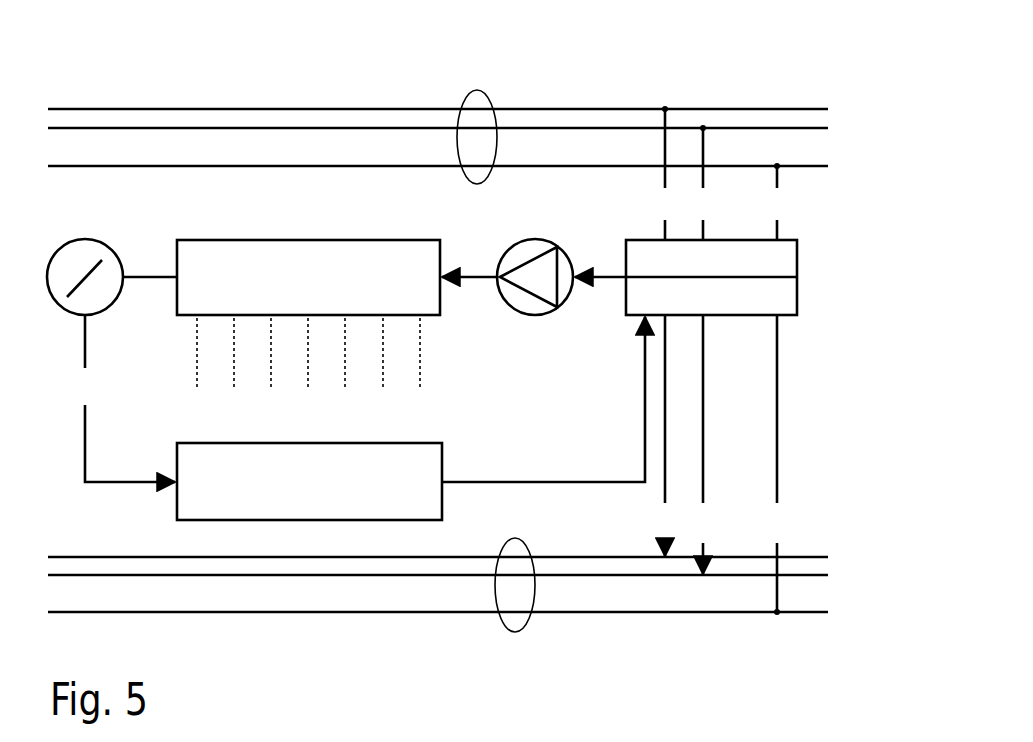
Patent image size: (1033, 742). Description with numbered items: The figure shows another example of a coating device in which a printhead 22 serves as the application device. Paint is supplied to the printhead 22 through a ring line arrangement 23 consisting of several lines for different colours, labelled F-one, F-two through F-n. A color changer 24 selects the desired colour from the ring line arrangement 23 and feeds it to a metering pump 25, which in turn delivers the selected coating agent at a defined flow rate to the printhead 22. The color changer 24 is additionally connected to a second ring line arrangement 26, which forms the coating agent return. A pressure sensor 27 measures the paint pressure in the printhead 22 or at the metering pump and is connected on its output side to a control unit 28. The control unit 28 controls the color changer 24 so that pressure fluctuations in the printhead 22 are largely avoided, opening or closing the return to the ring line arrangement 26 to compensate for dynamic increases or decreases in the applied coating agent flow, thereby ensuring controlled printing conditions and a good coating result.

The printhead 22 is at (330, 240).
The ring line arrangement 23 is at (473, 90).
The color changer 24 is at (797, 260).
The metering pump 25 is at (547, 240).
The ring line arrangement 26 is at (512, 630).
The pressure sensor 27 is at (107, 240).
The control unit 28 is at (442, 455).